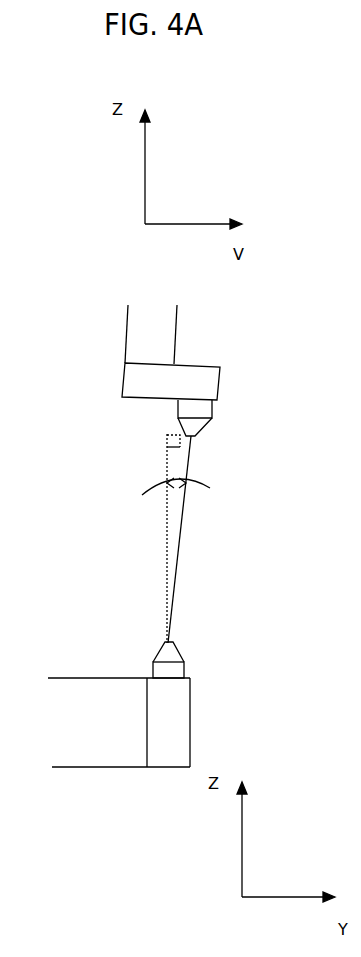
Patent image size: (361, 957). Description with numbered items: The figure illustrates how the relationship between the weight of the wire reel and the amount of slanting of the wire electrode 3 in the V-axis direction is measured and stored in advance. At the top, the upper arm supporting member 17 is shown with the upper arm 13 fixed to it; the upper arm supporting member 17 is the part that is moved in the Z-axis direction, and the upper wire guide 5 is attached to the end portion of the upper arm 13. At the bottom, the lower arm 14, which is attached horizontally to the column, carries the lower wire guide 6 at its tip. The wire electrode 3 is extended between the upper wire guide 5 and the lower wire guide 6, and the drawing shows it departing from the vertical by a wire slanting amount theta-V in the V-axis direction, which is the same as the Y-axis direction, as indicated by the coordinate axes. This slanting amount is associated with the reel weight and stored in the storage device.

The upper arm supporting member 17 is at (146, 342).
The upper arm 13 is at (203, 363).
The upper wire guide 5 is at (210, 419).
The wire electrode 3 is at (181, 540).
The lower wire guide 6 is at (185, 667).
The lower arm 14 is at (92, 745).